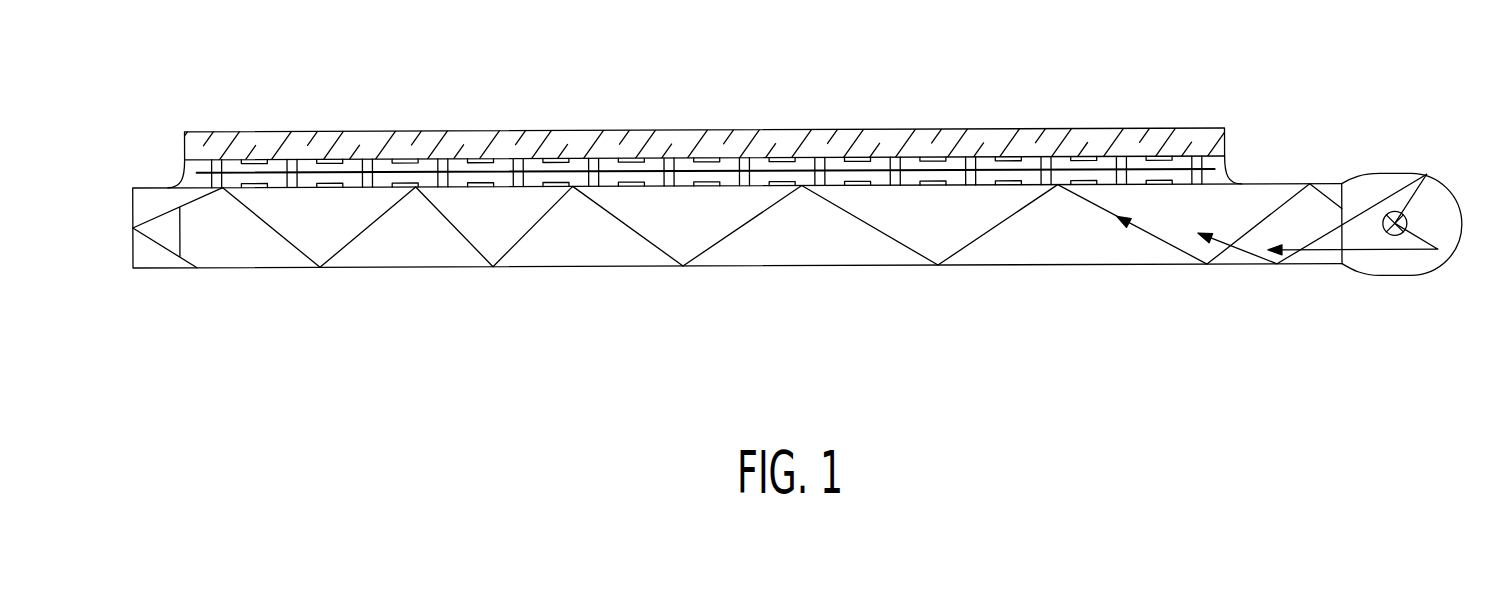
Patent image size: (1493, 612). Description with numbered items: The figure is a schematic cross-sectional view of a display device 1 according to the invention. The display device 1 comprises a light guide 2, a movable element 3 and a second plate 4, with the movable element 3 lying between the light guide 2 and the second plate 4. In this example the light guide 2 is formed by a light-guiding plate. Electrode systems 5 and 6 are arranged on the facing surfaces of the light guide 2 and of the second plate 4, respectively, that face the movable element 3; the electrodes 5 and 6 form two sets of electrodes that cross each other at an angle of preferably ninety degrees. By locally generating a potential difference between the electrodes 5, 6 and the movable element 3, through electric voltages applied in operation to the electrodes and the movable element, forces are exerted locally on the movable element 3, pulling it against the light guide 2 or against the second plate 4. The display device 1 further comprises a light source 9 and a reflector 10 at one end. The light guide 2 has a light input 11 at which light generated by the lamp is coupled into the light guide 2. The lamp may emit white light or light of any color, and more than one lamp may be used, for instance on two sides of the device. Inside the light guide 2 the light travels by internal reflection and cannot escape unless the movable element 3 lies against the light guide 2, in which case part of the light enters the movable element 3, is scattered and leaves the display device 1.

The display device 1 is at (332, 357).
The light guide 2 is at (853, 251).
The movable element 3 is at (1139, 172).
The second plate 4 is at (267, 157).
The electrode system 5 is at (1010, 183).
The electrode system 6 is at (1080, 155).
The light source 9 is at (1394, 212).
The reflector 10 is at (1462, 223).
The light input 11 is at (1343, 229).